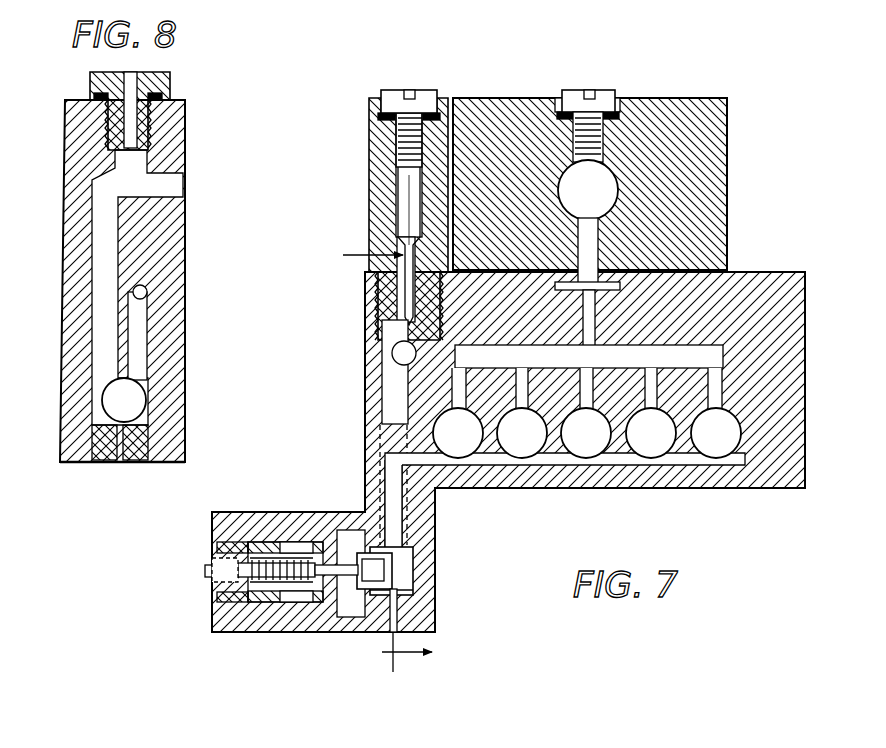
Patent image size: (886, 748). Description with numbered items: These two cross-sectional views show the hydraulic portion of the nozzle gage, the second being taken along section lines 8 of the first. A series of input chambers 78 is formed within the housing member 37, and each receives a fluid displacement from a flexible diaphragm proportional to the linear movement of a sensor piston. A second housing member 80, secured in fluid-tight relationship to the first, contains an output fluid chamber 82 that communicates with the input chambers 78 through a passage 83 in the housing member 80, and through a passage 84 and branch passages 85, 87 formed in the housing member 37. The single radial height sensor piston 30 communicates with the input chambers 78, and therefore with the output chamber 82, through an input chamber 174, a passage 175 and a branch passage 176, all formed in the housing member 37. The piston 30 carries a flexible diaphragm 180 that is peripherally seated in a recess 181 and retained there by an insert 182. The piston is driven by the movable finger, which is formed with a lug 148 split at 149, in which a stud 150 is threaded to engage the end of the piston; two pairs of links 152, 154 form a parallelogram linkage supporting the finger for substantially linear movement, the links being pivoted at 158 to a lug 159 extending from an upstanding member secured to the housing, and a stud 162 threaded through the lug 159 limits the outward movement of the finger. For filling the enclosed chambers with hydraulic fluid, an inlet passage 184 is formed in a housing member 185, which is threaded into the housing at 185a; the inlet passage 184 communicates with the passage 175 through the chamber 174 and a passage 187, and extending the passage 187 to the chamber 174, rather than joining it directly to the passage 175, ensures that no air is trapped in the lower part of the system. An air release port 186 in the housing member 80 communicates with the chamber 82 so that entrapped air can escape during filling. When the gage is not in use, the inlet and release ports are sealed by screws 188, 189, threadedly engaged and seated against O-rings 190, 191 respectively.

In FIG. 7, the section lines 8— 8 is at (388, 457).
In FIG. 7, the sensor piston 30 is at (374, 571).
In FIG. 8, the housing member 37 is at (62, 368).
In FIG. 7, the housing member 37 is at (768, 270).
In FIG. 7, the input chambers 78 is at (587, 413).
In FIG. 7, the second housing member 80 is at (495, 100).
In FIG. 7, the output fluid chamber 82 is at (588, 190).
In FIG. 7, the passage 83 is at (595, 238).
In FIG. 7, the passage 84 is at (590, 332).
In FIG. 7, the branch passage 85 is at (654, 358).
In FIG. 7, the branch passage 87 is at (589, 356).
In FIG. 7, the lug 148 is at (262, 552).
In FIG. 7, the split 149 is at (260, 590).
In FIG. 7, the stud 150 is at (320, 550).
In FIG. 7, the links 152 is at (225, 545).
In FIG. 7, the links 154 is at (283, 542).
In FIG. 7, the pivot 158 is at (305, 583).
In FIG. 7, the lug 159 is at (215, 578).
In FIG. 7, the stud 162 is at (212, 568).
In FIG. 8, the input chamber 174 is at (124, 400).
In FIG. 7, the input chamber 174 is at (403, 558).
In FIG. 8, the passage 175 is at (142, 350).
In FIG. 7, the passage 175 is at (393, 498).
In FIG. 8, the branch passage 176 is at (147, 292).
In FIG. 7, the branch passage 176 is at (553, 457).
In FIG. 7, the flexible diaphragm 180 is at (395, 583).
In FIG. 7, the recess 181 is at (380, 617).
In FIG. 7, the insert 182 is at (325, 612).
In FIG. 7, the inlet passage 184 is at (402, 198).
In FIG. 8, the housing member 185 is at (92, 92).
In FIG. 7, the housing member 185 is at (374, 125).
In FIG. 8, the threaded connection 185a is at (106, 128).
In FIG. 7, the threaded connection 185a is at (388, 300).
In FIG. 7, the air release port 186 is at (598, 138).
In FIG. 8, the passage 187 is at (100, 257).
In FIG. 7, the passage 187 is at (390, 381).
In FIG. 7, the screw 188 is at (418, 96).
In FIG. 7, the screw 189 is at (606, 92).
In FIG. 7, the O-ring 190 is at (455, 127).
In FIG. 7, the O-ring 191 is at (548, 125).